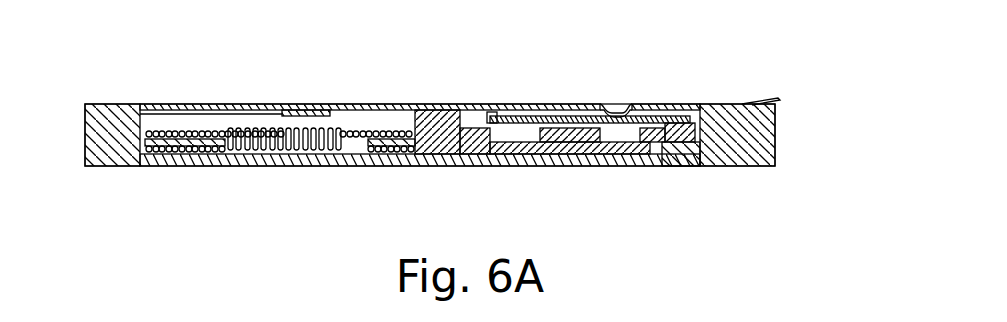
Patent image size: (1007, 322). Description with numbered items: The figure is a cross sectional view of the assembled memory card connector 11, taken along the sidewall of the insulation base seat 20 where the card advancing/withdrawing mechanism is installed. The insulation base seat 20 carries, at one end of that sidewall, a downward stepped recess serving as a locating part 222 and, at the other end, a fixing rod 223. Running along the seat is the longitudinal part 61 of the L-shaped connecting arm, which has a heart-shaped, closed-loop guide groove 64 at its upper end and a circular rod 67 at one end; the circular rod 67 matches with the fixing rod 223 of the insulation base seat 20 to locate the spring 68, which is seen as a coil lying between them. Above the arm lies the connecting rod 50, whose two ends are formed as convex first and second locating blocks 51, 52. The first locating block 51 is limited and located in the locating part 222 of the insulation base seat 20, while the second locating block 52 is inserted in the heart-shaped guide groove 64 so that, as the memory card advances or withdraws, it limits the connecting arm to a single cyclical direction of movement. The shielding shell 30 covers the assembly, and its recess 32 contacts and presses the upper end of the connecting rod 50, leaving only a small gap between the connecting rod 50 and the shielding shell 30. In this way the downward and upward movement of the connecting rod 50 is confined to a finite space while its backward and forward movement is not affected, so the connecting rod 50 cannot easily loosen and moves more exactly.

The memory card connector 11 is at (405, 91).
The insulation base seat 20 is at (775, 140).
The shielding shell 30 is at (553, 104).
The recess 32 is at (620, 112).
The connecting rod 50 is at (672, 118).
The first locating block 51 is at (684, 165).
The second locating block 52 is at (499, 160).
The longitudinal part 61 is at (441, 166).
The guide groove 64 is at (540, 158).
The circular rod 67 is at (387, 166).
The spring 68 is at (265, 166).
The locating part 222 is at (697, 162).
The fixing rod 223 is at (186, 166).